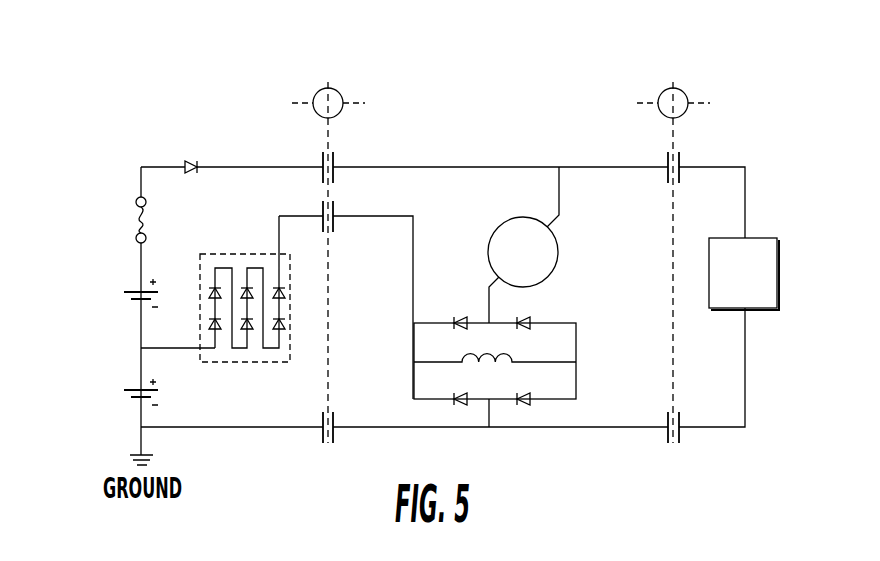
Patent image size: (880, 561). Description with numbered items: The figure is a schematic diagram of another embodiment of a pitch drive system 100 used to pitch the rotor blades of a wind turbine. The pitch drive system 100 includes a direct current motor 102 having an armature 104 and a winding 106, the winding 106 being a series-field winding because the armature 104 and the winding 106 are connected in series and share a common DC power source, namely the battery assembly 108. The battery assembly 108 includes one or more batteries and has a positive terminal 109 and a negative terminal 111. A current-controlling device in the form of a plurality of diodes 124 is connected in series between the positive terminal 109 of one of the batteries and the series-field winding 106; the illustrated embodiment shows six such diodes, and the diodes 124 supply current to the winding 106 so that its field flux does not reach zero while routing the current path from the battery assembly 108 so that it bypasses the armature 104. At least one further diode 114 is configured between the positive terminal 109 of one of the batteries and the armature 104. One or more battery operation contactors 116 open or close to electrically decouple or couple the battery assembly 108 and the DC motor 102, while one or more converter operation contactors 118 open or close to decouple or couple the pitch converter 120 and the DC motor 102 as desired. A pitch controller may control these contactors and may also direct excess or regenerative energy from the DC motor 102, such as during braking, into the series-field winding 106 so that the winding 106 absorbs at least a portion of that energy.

The pitch drive system 100 is at (90, 156).
The direct current (DC) motor 102 is at (467, 224).
The armature 104 is at (559, 255).
The winding 106 is at (491, 372).
The battery assembly 108 is at (75, 280).
The positive terminal 109 is at (148, 285).
The negative terminal 111 is at (147, 308).
The diode 114 is at (184, 142).
The battery operation contactor 116 is at (326, 225).
The converter operation contactor 118 is at (673, 225).
The pitch converter 120 is at (760, 288).
The plurality of diodes 124 is at (243, 252).